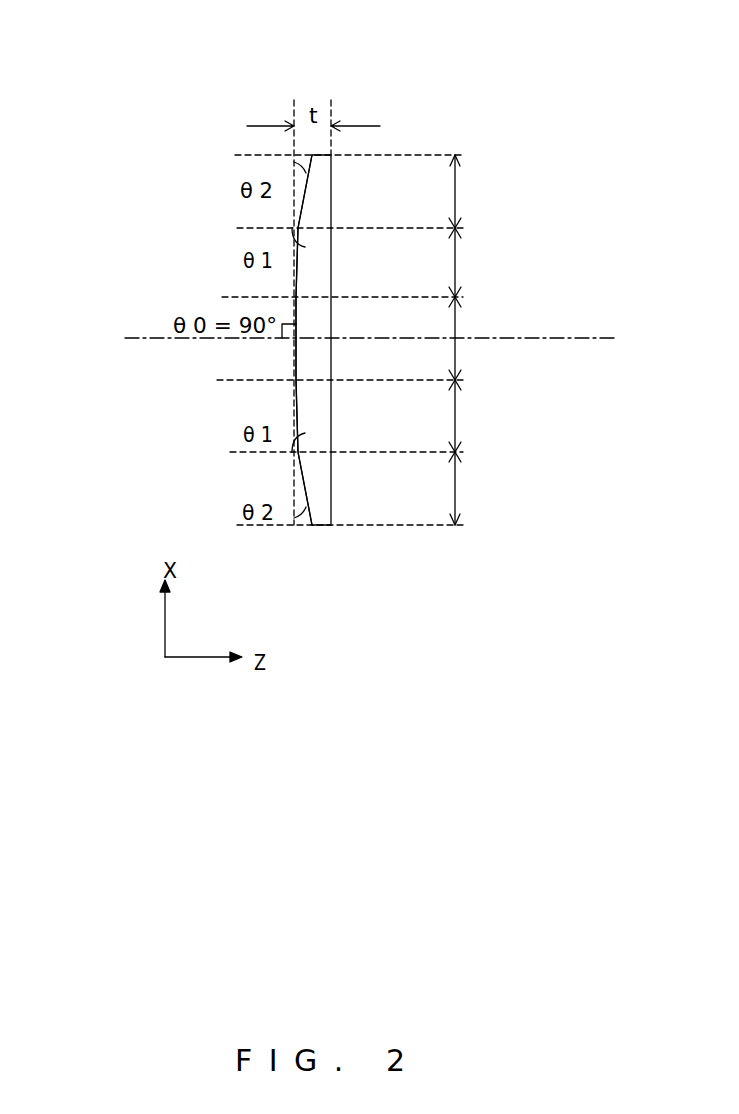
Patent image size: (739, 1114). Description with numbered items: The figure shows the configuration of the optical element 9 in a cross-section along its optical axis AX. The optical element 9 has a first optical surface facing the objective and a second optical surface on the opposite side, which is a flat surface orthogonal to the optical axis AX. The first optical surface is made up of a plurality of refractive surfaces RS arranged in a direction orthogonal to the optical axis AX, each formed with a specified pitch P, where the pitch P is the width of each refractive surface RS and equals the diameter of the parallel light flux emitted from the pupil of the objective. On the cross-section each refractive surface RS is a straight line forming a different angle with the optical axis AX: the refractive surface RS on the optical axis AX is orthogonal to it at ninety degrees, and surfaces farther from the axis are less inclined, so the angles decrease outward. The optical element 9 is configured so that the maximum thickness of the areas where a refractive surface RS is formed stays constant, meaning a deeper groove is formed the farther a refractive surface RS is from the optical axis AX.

The optical element 9 is at (482, 102).
The refractive surface RS is at (300, 207).
The optical axis AX is at (148, 338).
The pitch P is at (465, 340).